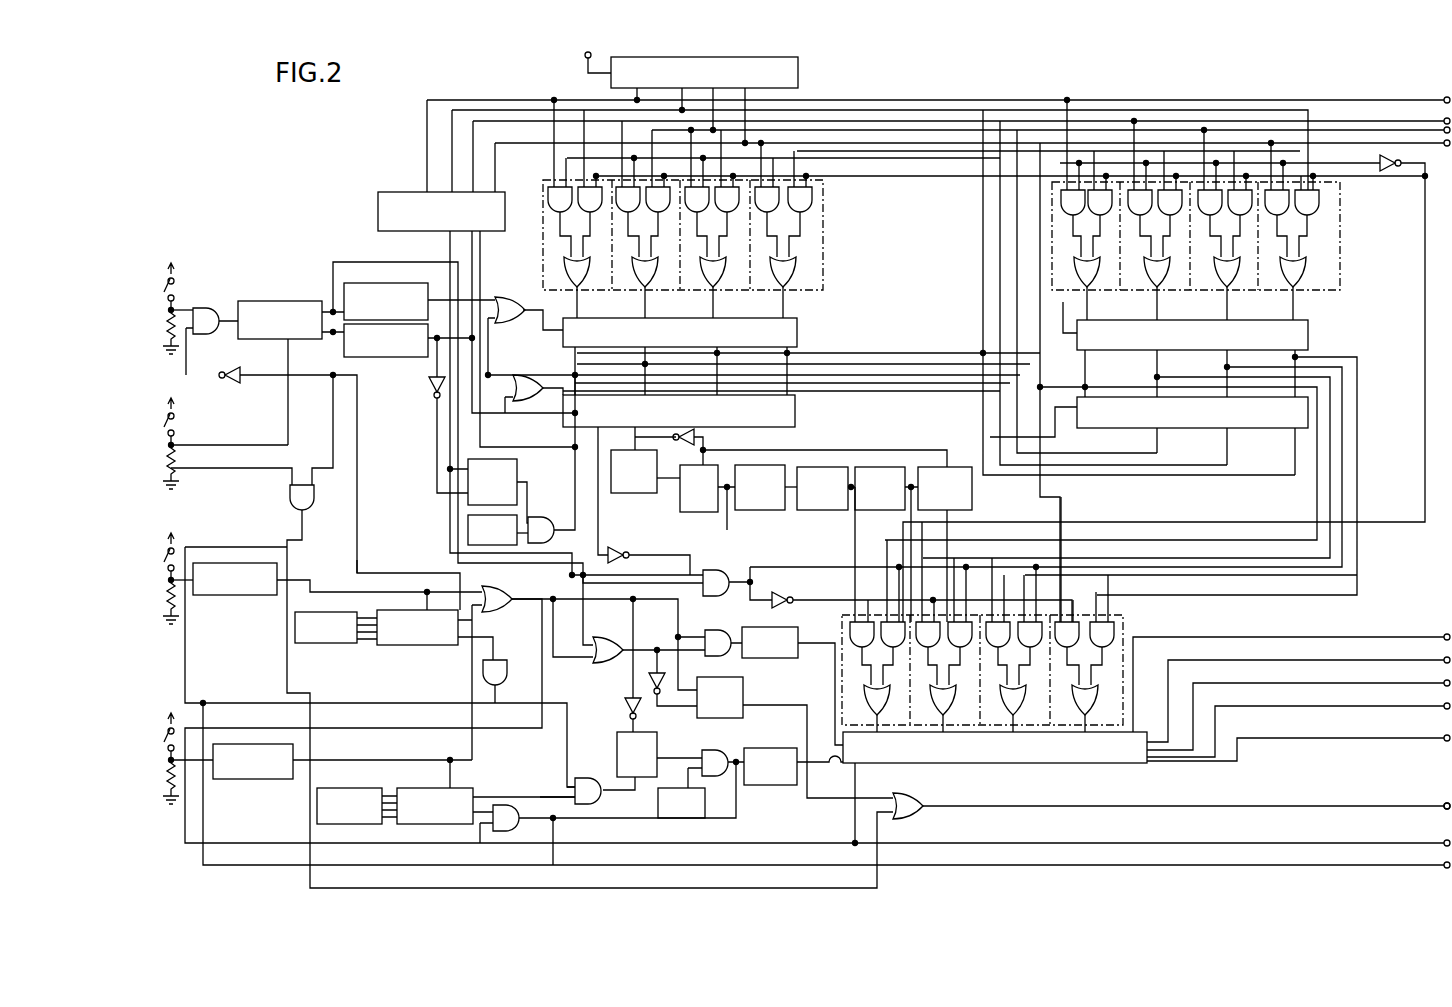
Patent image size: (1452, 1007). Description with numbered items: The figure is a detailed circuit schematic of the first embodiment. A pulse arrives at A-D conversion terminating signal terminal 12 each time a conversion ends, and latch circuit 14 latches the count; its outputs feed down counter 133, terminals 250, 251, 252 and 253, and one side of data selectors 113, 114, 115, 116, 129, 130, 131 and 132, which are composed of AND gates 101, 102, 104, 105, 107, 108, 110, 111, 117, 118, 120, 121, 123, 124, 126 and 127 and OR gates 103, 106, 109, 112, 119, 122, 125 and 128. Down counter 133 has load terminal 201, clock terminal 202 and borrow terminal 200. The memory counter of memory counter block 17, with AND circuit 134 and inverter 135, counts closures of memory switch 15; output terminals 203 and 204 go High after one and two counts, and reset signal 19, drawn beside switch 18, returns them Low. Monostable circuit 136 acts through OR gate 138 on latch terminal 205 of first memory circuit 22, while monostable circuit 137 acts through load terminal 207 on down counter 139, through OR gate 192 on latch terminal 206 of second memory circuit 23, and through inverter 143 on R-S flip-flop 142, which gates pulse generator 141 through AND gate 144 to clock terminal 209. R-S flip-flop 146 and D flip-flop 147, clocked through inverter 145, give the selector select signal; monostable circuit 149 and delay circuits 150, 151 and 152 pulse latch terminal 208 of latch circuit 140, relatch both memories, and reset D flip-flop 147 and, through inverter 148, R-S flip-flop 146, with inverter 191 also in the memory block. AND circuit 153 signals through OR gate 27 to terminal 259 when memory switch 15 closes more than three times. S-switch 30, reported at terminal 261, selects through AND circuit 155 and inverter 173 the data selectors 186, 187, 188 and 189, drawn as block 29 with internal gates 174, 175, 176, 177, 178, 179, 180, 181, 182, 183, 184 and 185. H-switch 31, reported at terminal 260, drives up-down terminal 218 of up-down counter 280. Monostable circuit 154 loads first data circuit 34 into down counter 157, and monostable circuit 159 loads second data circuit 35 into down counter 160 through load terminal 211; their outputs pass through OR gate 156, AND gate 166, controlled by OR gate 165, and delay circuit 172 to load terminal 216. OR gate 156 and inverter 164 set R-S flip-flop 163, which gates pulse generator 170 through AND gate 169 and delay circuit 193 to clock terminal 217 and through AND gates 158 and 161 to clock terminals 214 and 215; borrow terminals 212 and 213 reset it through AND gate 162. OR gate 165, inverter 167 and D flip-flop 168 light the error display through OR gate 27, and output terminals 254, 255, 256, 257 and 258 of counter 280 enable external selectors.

The A-D conversion terminating signal terminal 12 is at (584, 54).
The latch circuit 14 is at (675, 52).
The memory switch 15 is at (168, 300).
The memory counter 17 is at (282, 301).
The switch 18 is at (168, 436).
The reset signal 19 is at (286, 442).
The first memory circuit 22 is at (633, 350).
The second memory circuit 23 is at (1125, 350).
The OR circuit 27 is at (918, 812).
The gate circuit 29 is at (1123, 690).
The S-switch 30 is at (168, 570).
The H-switch 31 is at (166, 750).
The first data circuit 34 is at (297, 600).
The second data circuit 35 is at (365, 788).
The AND gate 101 is at (552, 195).
The AND gate 102 is at (568, 210).
The OR gate 103 is at (584, 250).
The AND gate 104 is at (587, 208).
The AND gate 105 is at (642, 210).
The OR gate 106 is at (650, 256).
The AND gate 107 is at (672, 210).
The AND gate 108 is at (708, 210).
The OR gate 109 is at (718, 253).
The AND gate 110 is at (740, 210).
The AND gate 111 is at (785, 210).
The OR gate 112 is at (776, 262).
The data selector 113 is at (578, 290).
The data selector 114 is at (647, 290).
The data selector 115 is at (715, 290).
The data selector 116 is at (785, 290).
The AND gate 117 is at (1073, 212).
The AND gate 118 is at (1104, 212).
The OR gate 119 is at (1093, 260).
The AND gate 120 is at (1140, 212).
The AND gate 121 is at (1170, 212).
The OR gate 122 is at (1163, 260).
The AND gate 123 is at (1210, 212).
The AND gate 124 is at (1240, 212).
The OR gate 125 is at (1233, 260).
The AND gate 126 is at (1276, 212).
The AND gate 127 is at (1306, 212).
The OR gate 128 is at (1305, 255).
The data selector 129 is at (1090, 290).
The data selector 130 is at (1159, 290).
The data selector 131 is at (1229, 290).
The data selector 132 is at (1295, 290).
The down counter 133 is at (420, 192).
The AND circuit 134 is at (210, 330).
The inverter 135 is at (222, 378).
The monostable circuit 136 is at (377, 283).
The monostable circuit 137 is at (383, 357).
The OR circuit 138 is at (545, 320).
The down counter 139 is at (785, 395).
The latch circuit 140 is at (1210, 428).
The pulse generator 141 is at (468, 533).
The R-S flip-flop 142 is at (468, 490).
The inverter 143 is at (430, 398).
The AND gate 144 is at (552, 530).
The inverter 145 is at (615, 547).
The R-S flip-flop 146 is at (638, 493).
The D flip-flop 147 is at (686, 512).
The inverter 148 is at (700, 435).
The monostable circuit 149 is at (760, 510).
The delay circuit 150 is at (812, 510).
The delay circuit 151 is at (870, 510).
The delay circuit 152 is at (930, 510).
The AND circuit 153 is at (290, 497).
The monostable circuit 154 is at (232, 595).
The AND circuit 155 is at (718, 596).
The OR circuit 156 is at (458, 568).
The down counter 157 is at (377, 648).
The AND circuit 158 is at (505, 665).
The monostable circuit 159 is at (262, 779).
The down counter 160 is at (445, 788).
The AND circuit 161 is at (609, 813).
The AND circuit 162 is at (604, 792).
The R-S flip-flop 163 is at (617, 758).
The inverter 164 is at (628, 705).
The OR circuit 165 is at (600, 660).
The AND circuit 166 is at (700, 636).
The inverter 167 is at (655, 696).
The D flip-flop 168 is at (795, 737).
The AND circuit 169 is at (722, 752).
The pulse generator 170 is at (660, 788).
The delay circuit 172 is at (805, 658).
The inverter 173 is at (770, 600).
The AND gate 174 is at (855, 630).
The AND gate 175 is at (880, 645).
The OR gate 176 is at (868, 680).
The AND gate 177 is at (918, 594).
The AND gate 178 is at (952, 612).
The OR gate 179 is at (935, 682).
The AND gate 180 is at (987, 612).
The AND gate 181 is at (1020, 616).
The OR gate 182 is at (1005, 683).
The AND gate 183 is at (1056, 582).
The AND gate 184 is at (1110, 635).
The OR gate 185 is at (1077, 682).
The data selector 186 is at (855, 615).
The data selector 187 is at (899, 715).
The data selector 188 is at (974, 715).
The data selector 189 is at (1123, 618).
The inverter 191 is at (1400, 160).
The OR circuit 192 is at (530, 392).
The delay circuit 193 is at (788, 748).
The borrow terminal 200 is at (450, 250).
The load terminal 201 is at (473, 240).
The clock terminal 202 is at (480, 258).
The output terminal 203 is at (333, 300).
The output terminal 204 is at (362, 355).
The latch terminal 205 is at (520, 300).
The latch terminal 206 is at (1066, 292).
The load terminal 207 is at (535, 376).
The latch terminal 208 is at (1065, 437).
The clock terminal 209 is at (530, 510).
The load terminal 211 is at (455, 785).
The borrow terminal 212 is at (465, 620).
The borrow terminal 213 is at (485, 797).
The clock terminal 214 is at (458, 648).
The clock terminal 215 is at (445, 824).
The load terminal 216 is at (843, 750).
The clock terminal 217 is at (824, 793).
The up-count or down-count terminal 218 is at (975, 790).
The terminal 250 is at (1445, 97).
The terminal 251 is at (1445, 118).
The terminal 252 is at (1445, 128).
The terminal 253 is at (1445, 141).
The output terminal 254 is at (1291, 678).
The output terminal 255 is at (1298, 695).
The output terminal 256 is at (1298, 710).
The output terminal 257 is at (1298, 725).
The output terminal 258 is at (1298, 743).
The terminal 259 is at (1419, 806).
The terminal 260 is at (1419, 846).
The terminal 261 is at (1419, 870).
The up-down counter 280 is at (1005, 765).